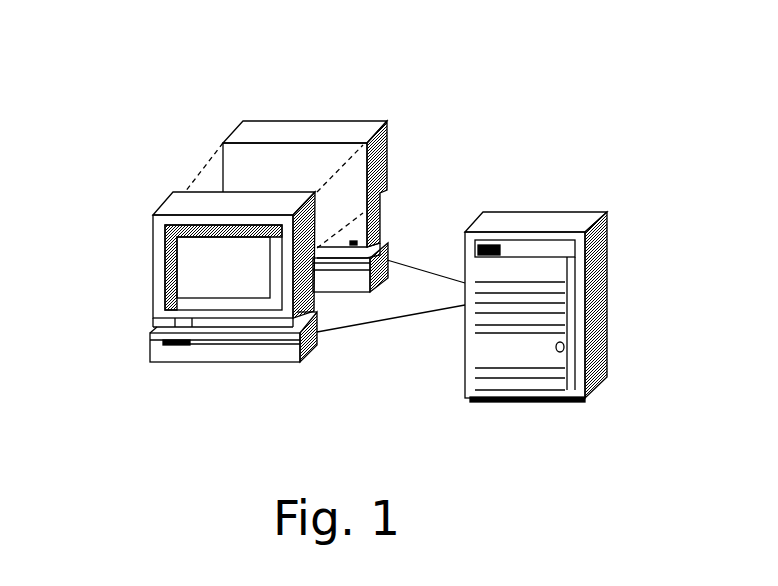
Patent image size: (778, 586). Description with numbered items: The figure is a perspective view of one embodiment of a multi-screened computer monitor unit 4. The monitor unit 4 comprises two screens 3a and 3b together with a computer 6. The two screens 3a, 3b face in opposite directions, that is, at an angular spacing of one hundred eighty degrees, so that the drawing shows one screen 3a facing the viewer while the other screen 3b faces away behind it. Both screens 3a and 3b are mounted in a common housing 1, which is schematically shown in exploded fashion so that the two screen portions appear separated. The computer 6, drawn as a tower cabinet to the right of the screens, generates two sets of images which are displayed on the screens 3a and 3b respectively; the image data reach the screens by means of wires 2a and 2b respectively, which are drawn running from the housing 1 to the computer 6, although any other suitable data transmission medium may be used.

The common housing 1 is at (227, 187).
The wire 2a is at (372, 323).
The wire 2b is at (413, 267).
The screen 3a is at (202, 267).
The screen 3b is at (317, 118).
The multi-screened computer monitor unit 4 is at (552, 280).
The computer 6 is at (545, 402).